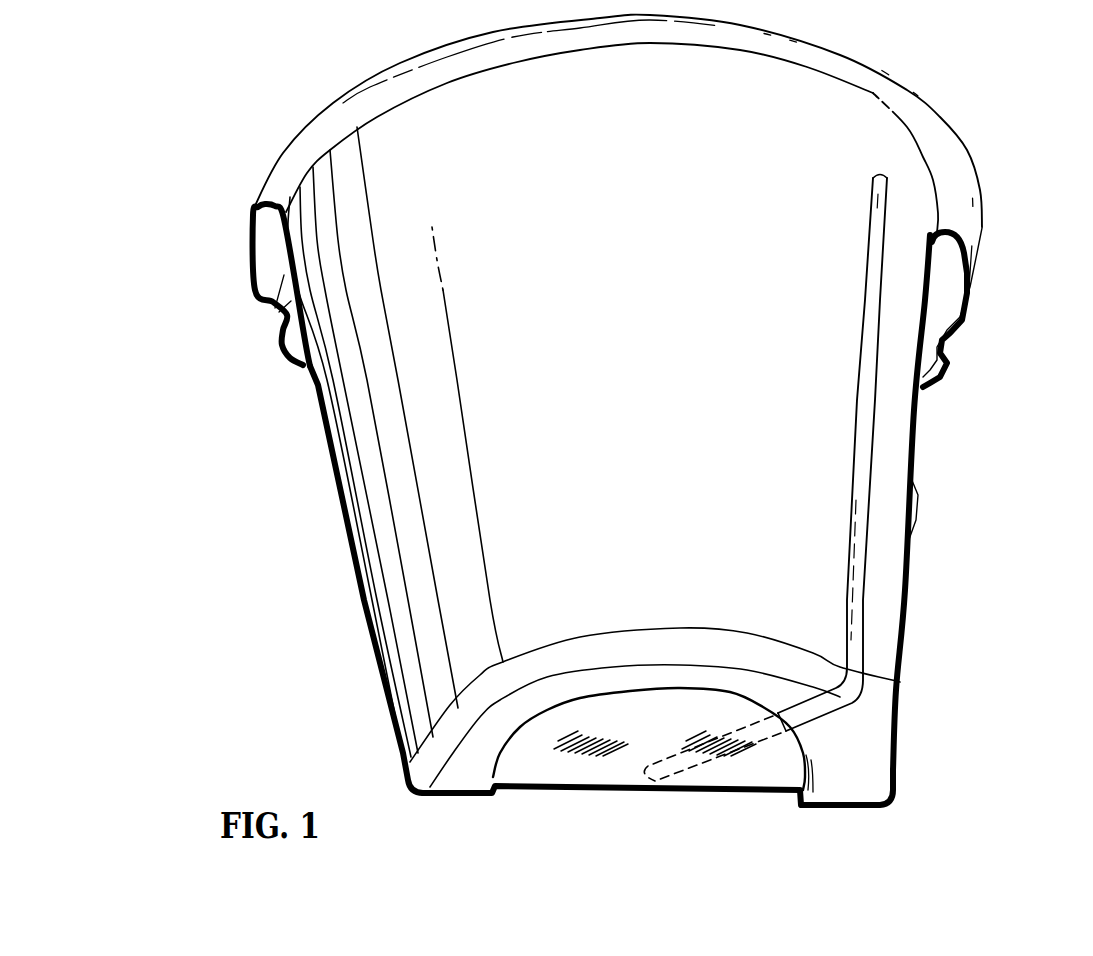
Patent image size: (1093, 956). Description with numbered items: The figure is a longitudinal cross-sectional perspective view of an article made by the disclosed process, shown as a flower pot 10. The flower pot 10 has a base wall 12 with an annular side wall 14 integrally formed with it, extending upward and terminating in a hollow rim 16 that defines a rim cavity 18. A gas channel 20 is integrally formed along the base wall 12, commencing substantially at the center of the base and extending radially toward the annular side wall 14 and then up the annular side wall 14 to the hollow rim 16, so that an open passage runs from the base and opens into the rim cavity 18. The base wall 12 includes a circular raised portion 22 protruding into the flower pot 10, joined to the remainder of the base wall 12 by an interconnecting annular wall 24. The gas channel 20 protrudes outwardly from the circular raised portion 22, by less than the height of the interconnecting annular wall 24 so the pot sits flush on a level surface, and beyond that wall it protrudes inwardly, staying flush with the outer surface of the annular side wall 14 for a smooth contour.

The flower pot 10 is at (241, 138).
The base wall 12 is at (850, 809).
The annular side wall 14 is at (910, 577).
The hollow rim 16 is at (953, 177).
The rim cavity 18 is at (942, 296).
The gas channel 20 is at (853, 661).
The circular raised portion 22 is at (643, 792).
The interconnecting annular wall 24 is at (797, 796).